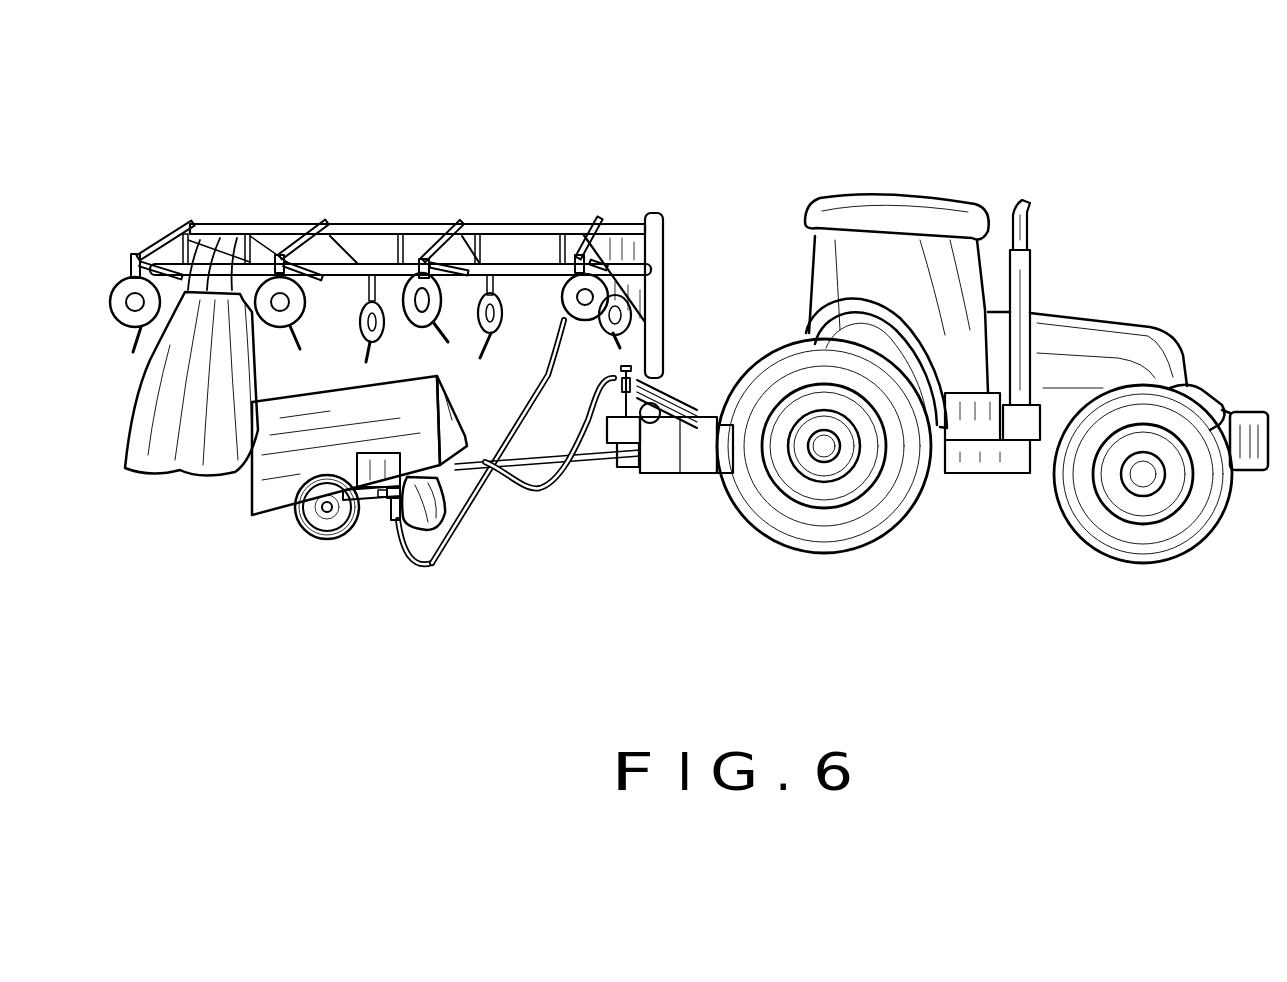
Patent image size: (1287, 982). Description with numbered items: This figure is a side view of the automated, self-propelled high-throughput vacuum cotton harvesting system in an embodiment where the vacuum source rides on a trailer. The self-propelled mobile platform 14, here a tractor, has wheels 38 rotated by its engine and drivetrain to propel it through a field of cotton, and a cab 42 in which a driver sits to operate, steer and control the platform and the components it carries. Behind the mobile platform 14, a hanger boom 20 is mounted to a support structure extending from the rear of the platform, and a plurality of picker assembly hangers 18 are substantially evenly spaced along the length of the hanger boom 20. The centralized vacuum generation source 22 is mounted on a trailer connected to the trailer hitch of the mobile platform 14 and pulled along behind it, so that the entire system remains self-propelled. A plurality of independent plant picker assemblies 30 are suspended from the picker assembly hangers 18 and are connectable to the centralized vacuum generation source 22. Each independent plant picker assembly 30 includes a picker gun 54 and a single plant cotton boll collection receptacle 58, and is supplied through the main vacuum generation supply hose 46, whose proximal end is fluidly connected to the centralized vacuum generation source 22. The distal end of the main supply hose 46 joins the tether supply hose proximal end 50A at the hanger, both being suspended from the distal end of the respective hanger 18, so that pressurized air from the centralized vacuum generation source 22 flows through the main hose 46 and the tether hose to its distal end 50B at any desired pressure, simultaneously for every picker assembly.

The self-propelled mobile platform 14 is at (1000, 356).
The picker assembly hangers 18 is at (168, 235).
The hanger boom 20 is at (516, 264).
The centralized vacuum generation source 22 is at (303, 425).
The independent plant picker assemblies 30 is at (112, 338).
The wheels 38 is at (864, 533).
The cab 42 is at (890, 253).
The main vacuum generation supply hose or cord 46 is at (606, 478).
The tether vacuum generation supply hose proximal end 50A is at (562, 314).
The tether vacuum generation supply hose distal end 50B is at (133, 352).
The picker gun 54 is at (376, 527).
The single plant cotton boll collection receptacle 58 is at (437, 520).